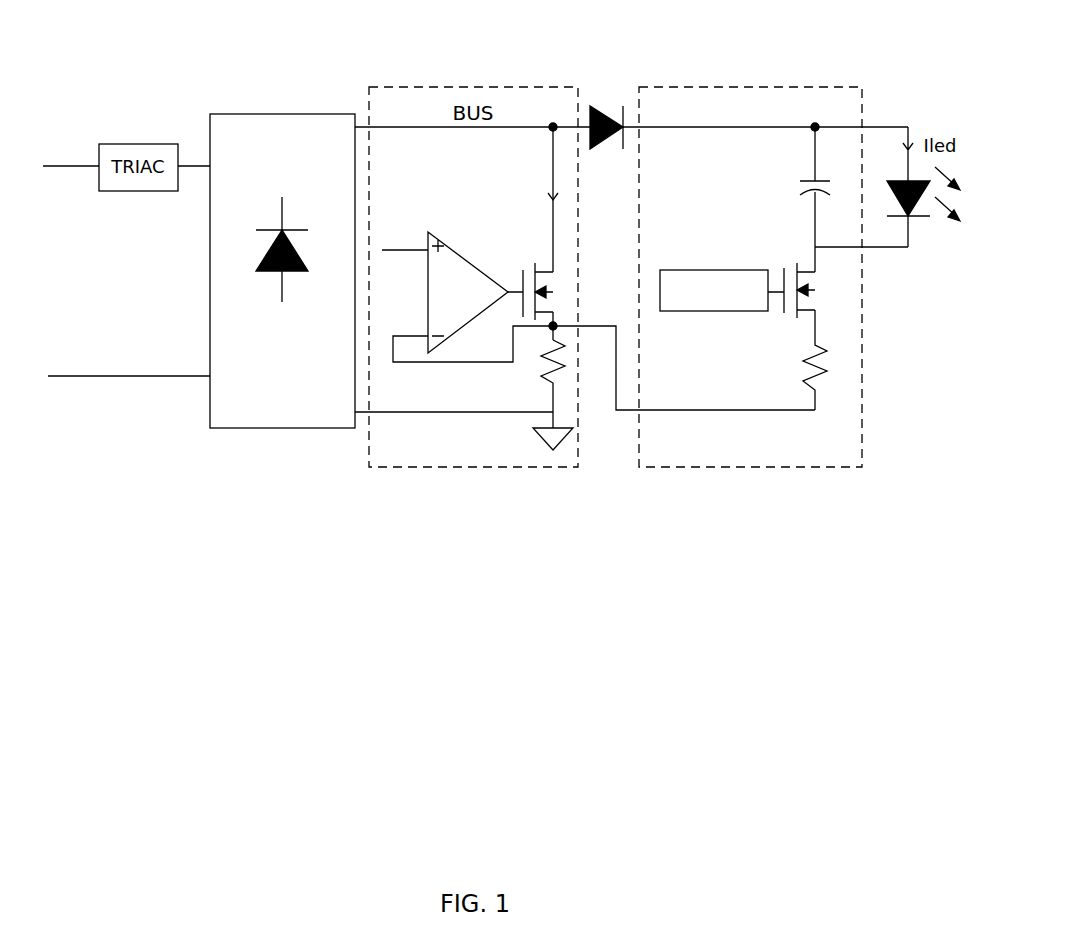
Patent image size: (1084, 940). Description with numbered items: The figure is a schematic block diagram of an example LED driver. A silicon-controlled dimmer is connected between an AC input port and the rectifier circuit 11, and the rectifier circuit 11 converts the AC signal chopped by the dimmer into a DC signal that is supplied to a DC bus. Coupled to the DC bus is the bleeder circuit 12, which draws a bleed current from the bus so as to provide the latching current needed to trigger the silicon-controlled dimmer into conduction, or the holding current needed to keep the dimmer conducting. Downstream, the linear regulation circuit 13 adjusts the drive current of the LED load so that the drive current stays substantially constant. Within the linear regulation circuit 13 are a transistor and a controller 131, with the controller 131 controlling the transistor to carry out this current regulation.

The rectifier circuit 11 is at (247, 114).
The bleeder circuit 12 is at (457, 87).
The linear regulation circuit 13 is at (773, 245).
The controller 131 is at (705, 268).